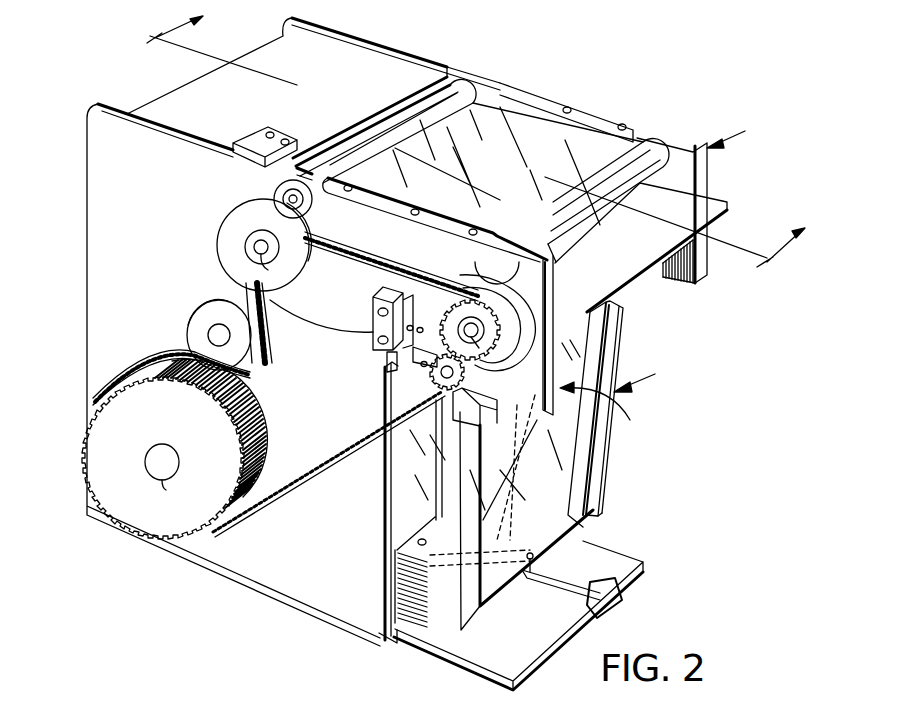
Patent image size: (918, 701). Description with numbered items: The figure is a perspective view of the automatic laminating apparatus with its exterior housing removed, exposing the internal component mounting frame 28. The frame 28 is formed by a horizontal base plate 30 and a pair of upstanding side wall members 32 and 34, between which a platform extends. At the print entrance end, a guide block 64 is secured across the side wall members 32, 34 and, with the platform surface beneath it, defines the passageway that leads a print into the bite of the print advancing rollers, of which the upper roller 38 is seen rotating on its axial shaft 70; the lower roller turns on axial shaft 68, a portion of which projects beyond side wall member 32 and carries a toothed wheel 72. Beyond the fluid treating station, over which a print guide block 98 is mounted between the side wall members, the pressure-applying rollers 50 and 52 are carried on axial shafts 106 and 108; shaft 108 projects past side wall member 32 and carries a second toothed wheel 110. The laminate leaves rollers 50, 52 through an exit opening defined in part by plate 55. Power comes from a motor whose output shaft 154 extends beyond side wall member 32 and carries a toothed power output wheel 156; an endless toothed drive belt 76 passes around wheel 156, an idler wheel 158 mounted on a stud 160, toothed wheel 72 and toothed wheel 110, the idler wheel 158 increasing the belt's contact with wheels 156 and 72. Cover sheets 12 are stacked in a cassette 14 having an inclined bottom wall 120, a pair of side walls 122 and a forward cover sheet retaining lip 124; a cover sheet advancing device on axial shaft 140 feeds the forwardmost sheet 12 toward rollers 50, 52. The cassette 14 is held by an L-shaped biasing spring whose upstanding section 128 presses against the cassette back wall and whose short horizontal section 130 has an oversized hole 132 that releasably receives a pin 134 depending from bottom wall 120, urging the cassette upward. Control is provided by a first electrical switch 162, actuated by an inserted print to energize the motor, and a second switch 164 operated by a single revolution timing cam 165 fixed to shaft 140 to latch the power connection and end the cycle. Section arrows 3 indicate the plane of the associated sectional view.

The section line 3- 3 is at (481, 135).
The cover sheet 12 is at (602, 419).
The cassette 14 is at (632, 408).
The component mounting frame 28 is at (739, 134).
The base plate 30 is at (607, 560).
The side wall member 32 is at (354, 604).
The side wall member 34 is at (662, 138).
The upper print advancing roller 38 is at (466, 95).
The pressure-applying roller 50 is at (635, 180).
The lower pressure-applying roller 52 is at (574, 250).
The plate 55 is at (715, 200).
The guide block 64 is at (376, 72).
The axial shaft 68 is at (268, 262).
The axial shaft 70 is at (310, 203).
The toothed wheel 72 is at (228, 218).
The toothed drive belt 76 is at (345, 467).
The print guide block 98 is at (547, 128).
The axial shaft 106 is at (490, 258).
The axial shaft 108 is at (486, 356).
The toothed wheel 110 is at (548, 350).
The bottom wall 120 is at (505, 590).
The side walls 122 is at (450, 625).
The cover sheet retaining lip 124 is at (605, 485).
The upstanding section 128 is at (498, 480).
The horizontal section 130 is at (585, 600).
The oversized hole 132 is at (540, 557).
The pin 134 is at (540, 580).
The axial shaft 140 is at (468, 432).
The output shaft 154 is at (160, 480).
The toothed power output wheel 156 is at (95, 445).
The idler wheel 158 is at (207, 310).
The stud 160 is at (208, 336).
The first electrical switch 162 is at (250, 140).
The second switch 164 is at (373, 348).
The single revolution timing cam 165 is at (436, 378).